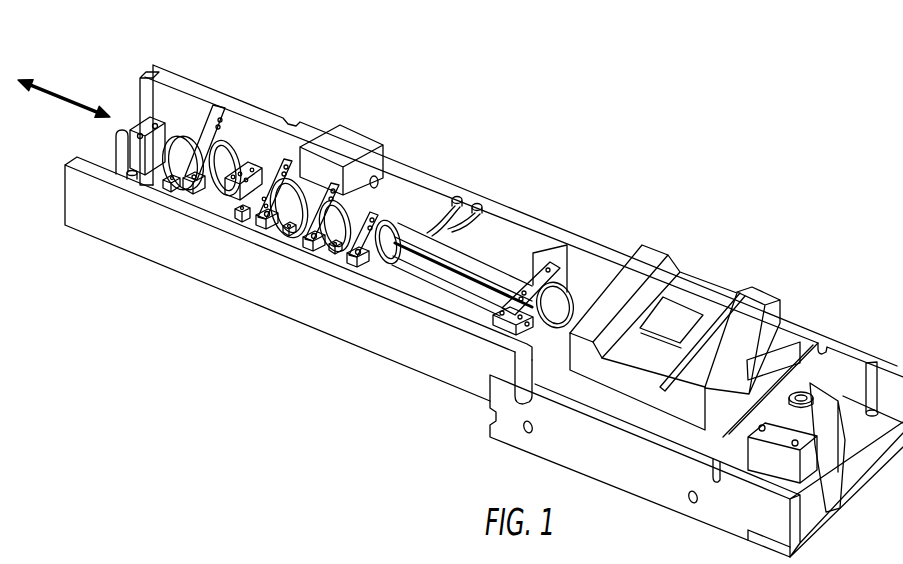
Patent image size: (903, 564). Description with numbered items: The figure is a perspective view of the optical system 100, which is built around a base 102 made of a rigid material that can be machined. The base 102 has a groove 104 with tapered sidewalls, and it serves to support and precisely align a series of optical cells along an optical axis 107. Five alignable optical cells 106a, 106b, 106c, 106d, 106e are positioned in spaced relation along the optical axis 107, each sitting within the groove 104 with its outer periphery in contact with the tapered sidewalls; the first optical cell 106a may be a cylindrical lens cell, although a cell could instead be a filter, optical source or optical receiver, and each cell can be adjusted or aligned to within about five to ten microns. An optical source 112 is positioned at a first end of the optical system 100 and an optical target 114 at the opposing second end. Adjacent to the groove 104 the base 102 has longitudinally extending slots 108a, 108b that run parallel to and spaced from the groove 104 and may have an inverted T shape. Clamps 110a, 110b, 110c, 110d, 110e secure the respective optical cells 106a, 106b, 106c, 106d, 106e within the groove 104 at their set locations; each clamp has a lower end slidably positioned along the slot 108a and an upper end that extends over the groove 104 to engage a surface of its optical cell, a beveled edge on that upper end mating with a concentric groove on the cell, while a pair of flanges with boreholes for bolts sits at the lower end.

The optical system 100 is at (711, 128).
The base 102 is at (103, 230).
The groove 104 is at (517, 277).
The optical cell 106a is at (502, 288).
The optical cell 106b is at (383, 220).
The optical cell 106c is at (347, 150).
The optical cell 106d is at (280, 162).
The optical cell 106e is at (218, 145).
The optical axis 107 is at (63, 100).
The slot 108a is at (420, 290).
The guide rail 108b is at (498, 277).
The clamp 110a is at (503, 312).
The clamp 110b is at (362, 238).
The clamp 110c is at (315, 218).
The clamp 110d is at (262, 195).
The clamp 110e is at (173, 185).
The optical source 112 is at (121, 100).
The optical target 114 is at (729, 257).